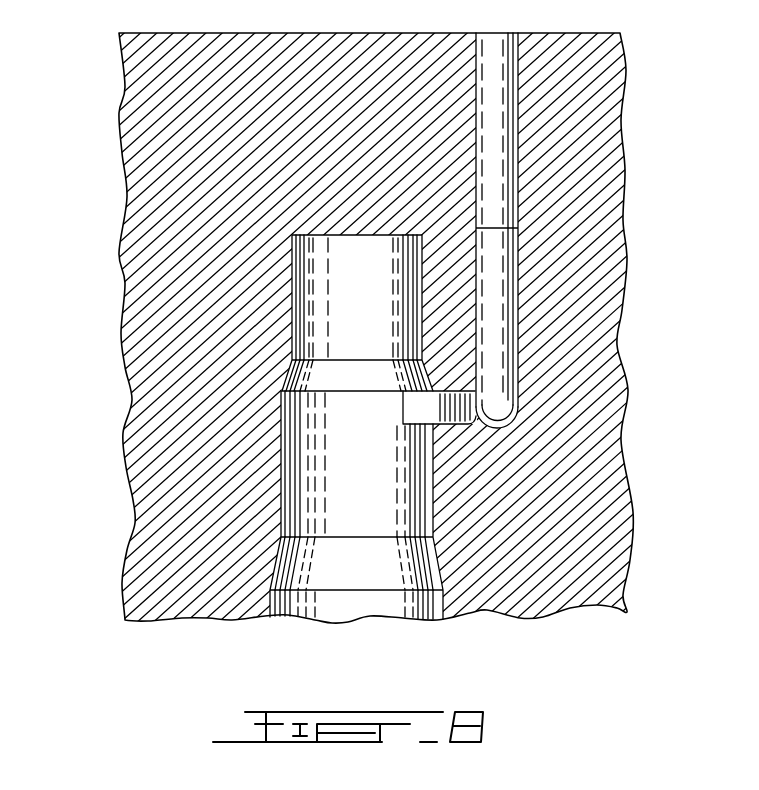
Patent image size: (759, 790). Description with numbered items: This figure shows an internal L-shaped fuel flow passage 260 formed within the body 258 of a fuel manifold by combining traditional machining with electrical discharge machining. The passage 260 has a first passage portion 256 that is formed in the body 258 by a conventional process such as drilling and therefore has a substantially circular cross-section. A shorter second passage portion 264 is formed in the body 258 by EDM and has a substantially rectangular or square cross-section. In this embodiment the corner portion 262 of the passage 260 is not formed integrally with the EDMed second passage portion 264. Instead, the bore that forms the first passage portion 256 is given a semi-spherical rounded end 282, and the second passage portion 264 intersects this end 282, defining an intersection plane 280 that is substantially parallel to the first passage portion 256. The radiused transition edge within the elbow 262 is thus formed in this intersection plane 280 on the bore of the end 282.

The body 258 is at (582, 192).
The first passage portion 256 is at (600, 290).
The L-shaped fuel flow passage 260 is at (537, 353).
The semi-spherical rounded end 282 is at (517, 403).
The corner portion 262 is at (514, 418).
The second passage portion 264 is at (448, 430).
The intersection plane 280 is at (487, 432).